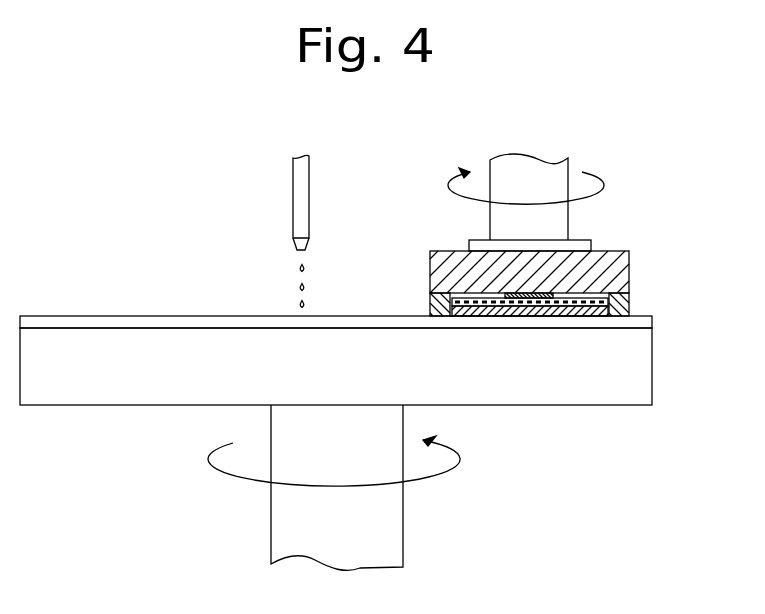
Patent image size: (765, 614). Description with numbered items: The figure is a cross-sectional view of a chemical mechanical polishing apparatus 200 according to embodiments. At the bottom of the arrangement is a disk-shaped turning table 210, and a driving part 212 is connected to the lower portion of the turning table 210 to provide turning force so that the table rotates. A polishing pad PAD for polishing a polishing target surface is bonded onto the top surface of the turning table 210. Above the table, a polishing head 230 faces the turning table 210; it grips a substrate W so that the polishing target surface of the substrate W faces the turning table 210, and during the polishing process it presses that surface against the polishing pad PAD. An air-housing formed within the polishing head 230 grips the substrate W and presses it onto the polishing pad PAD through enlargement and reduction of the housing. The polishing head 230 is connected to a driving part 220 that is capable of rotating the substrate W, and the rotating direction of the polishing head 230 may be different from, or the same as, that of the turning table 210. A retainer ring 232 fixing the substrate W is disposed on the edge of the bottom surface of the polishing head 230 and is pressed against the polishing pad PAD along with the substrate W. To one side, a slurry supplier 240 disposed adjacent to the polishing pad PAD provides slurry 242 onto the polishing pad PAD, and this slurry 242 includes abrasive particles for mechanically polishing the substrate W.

The polishing head assembly 200 is at (581, 236).
The turning table 210 is at (643, 368).
The driving part 212 is at (392, 523).
The driving part 220 is at (560, 220).
The polishing head 230 is at (630, 272).
The retainer ring 232 is at (620, 307).
The slurry supplier 240 is at (303, 197).
The slurry 242 is at (305, 285).
The polishing pad PAD is at (647, 323).
The substrate W is at (564, 314).